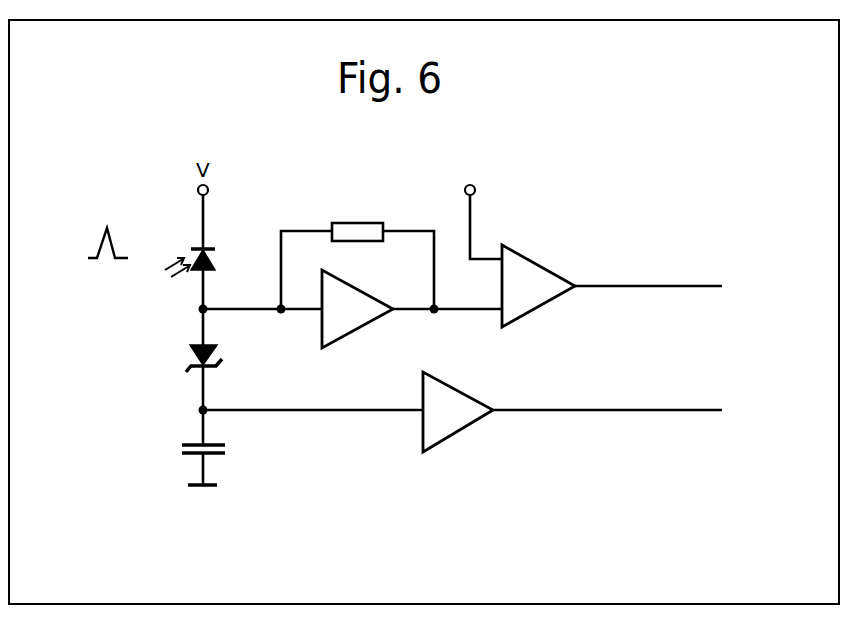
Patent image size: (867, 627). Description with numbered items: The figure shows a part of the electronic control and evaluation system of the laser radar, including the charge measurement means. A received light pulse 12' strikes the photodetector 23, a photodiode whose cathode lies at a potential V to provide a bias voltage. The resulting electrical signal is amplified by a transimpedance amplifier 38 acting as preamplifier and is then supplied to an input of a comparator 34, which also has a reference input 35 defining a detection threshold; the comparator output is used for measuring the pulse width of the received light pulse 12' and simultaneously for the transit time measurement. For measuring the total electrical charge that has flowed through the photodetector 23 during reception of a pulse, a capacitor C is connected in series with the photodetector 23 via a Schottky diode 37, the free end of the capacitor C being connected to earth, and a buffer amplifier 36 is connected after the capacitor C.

The received light pulse 12' is at (124, 234).
The photodetector 23 is at (216, 264).
The Schottky diode 37 is at (190, 356).
The capacitor C is at (226, 448).
The transimpedance amplifier 38 is at (355, 239).
The reference input 35 is at (473, 185).
The comparator 34 is at (532, 283).
The buffer amplifier 36 is at (465, 414).